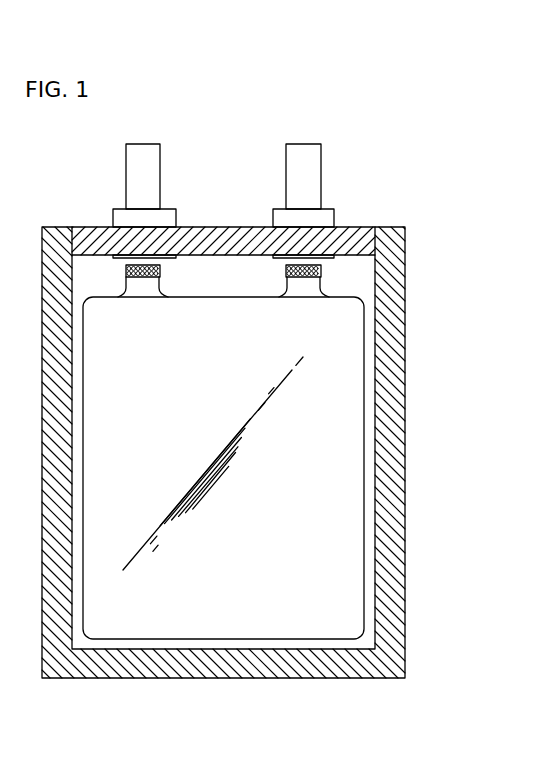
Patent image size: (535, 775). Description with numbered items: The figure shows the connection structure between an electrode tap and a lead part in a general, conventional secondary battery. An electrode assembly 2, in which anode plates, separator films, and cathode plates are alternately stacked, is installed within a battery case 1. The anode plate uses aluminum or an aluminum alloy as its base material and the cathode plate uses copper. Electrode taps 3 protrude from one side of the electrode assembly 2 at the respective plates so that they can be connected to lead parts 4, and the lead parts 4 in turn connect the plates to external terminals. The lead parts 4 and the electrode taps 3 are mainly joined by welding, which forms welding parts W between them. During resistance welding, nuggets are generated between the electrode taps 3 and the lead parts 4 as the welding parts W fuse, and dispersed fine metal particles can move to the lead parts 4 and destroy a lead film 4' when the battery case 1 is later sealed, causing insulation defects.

The battery case 1 is at (390, 520).
The electrode assembly 2 is at (342, 455).
The electrode tap 3 is at (310, 285).
The welding part W is at (323, 263).
The lead part 4 is at (262, 171).
The lead film 4' is at (259, 217).